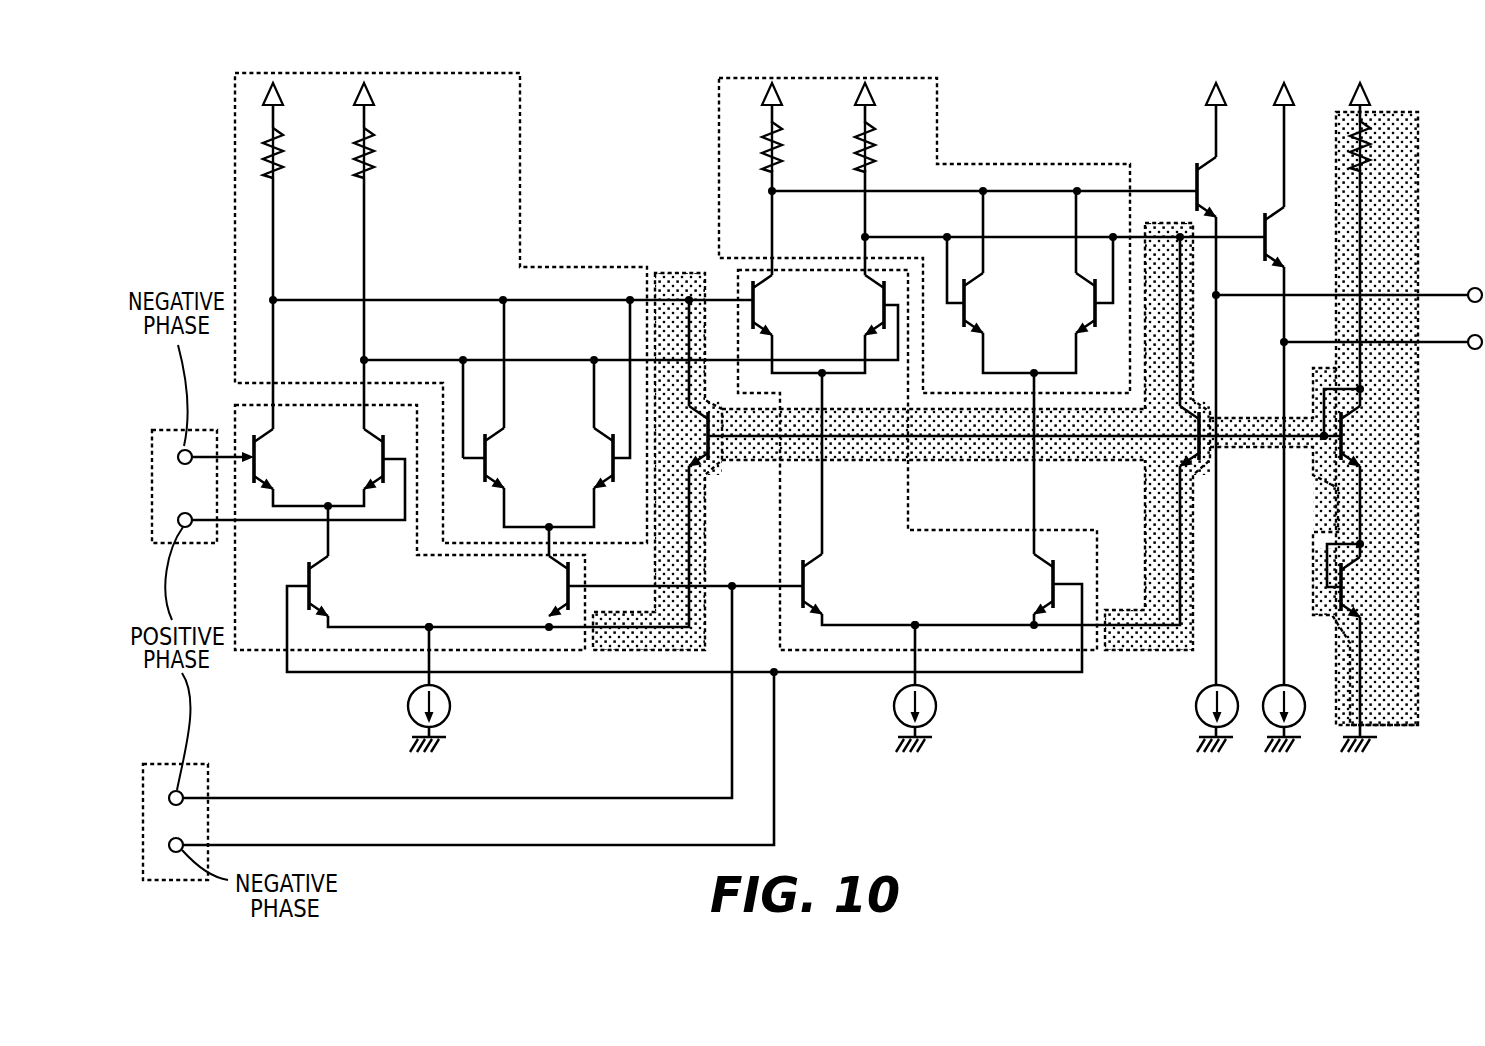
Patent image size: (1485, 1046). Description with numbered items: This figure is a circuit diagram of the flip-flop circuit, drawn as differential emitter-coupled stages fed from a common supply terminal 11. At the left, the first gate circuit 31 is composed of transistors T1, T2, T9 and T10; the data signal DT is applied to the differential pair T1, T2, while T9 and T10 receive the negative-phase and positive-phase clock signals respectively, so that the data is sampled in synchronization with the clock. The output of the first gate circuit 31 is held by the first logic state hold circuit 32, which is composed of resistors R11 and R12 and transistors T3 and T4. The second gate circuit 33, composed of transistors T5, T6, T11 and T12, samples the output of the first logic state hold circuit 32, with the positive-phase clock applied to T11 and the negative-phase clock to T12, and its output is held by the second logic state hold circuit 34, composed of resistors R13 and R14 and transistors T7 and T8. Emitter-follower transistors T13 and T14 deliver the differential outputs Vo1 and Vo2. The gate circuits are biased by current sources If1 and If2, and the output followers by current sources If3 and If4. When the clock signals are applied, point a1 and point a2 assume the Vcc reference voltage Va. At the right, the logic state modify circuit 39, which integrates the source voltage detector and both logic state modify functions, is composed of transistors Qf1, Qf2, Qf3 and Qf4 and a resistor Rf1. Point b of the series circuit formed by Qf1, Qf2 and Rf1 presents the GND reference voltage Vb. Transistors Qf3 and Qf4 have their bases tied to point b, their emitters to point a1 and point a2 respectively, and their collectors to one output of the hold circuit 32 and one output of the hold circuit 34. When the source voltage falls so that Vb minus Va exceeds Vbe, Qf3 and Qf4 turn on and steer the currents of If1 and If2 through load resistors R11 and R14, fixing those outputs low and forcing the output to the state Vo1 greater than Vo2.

The power supply terminal 11 is at (1368, 93).
The first gate circuit 31 is at (268, 654).
The first logic state hold circuit 32 is at (236, 200).
The second gate circuit 33 is at (934, 531).
The second logic state hold circuit 34 is at (719, 192).
The logic state modify circuit 39 is at (1418, 168).
The data signal DT is at (187, 443).
The resistor R11 is at (297, 153).
The resistor R12 is at (394, 153).
The resistor R13 is at (798, 147).
The resistor R14 is at (892, 147).
The resistor Rf1 is at (1381, 146).
The transistor T1 is at (273, 459).
The transistor T2 is at (363, 459).
The transistor T3 is at (504, 458).
The transistor T4 is at (594, 458).
The transistor T5 is at (776, 305).
The transistor T6 is at (863, 305).
The transistor T7 is at (991, 303).
The transistor T8 is at (1074, 303).
The transistor T9 is at (328, 586).
The transistor T10 is at (540, 586).
The transistor T11 is at (828, 584).
The transistor T12 is at (1025, 584).
The output transistor T13 is at (1223, 187).
The output transistor T14 is at (1292, 237).
The transistor Qf1 is at (1365, 587).
The transistor Qf2 is at (1365, 436).
The transistor Qf3 is at (685, 436).
The transistor Qf4 is at (1172, 436).
The current source If1 is at (411, 706).
The current source If2 is at (899, 706).
The current source If3 is at (1202, 706).
The current source If4 is at (1299, 706).
The output Vo1 is at (1453, 285).
The output Vo2 is at (1453, 332).
The point a1 is at (425, 612).
The point a2 is at (911, 610).
The point b is at (1311, 460).